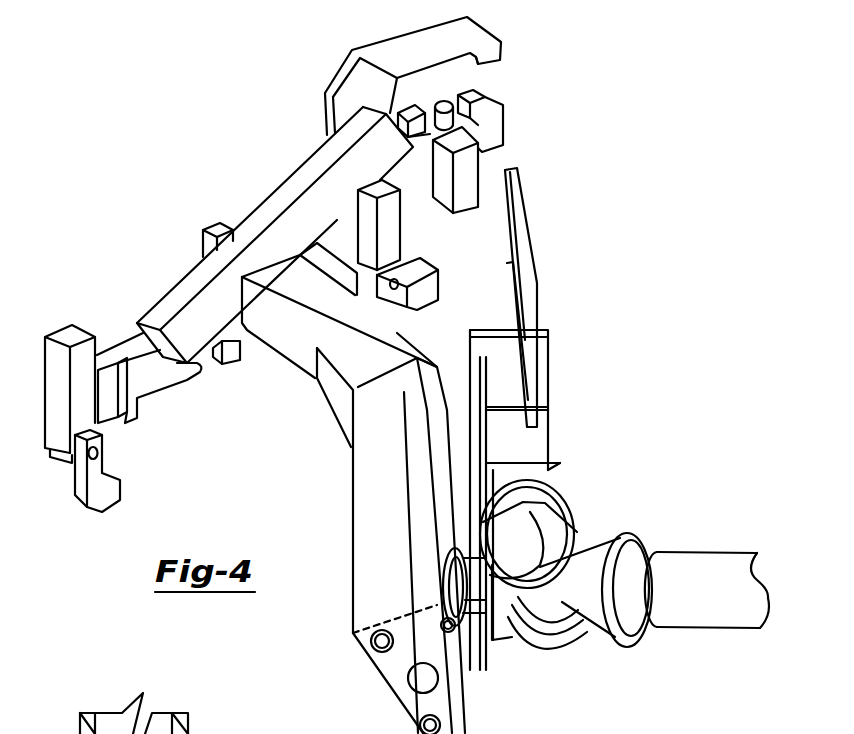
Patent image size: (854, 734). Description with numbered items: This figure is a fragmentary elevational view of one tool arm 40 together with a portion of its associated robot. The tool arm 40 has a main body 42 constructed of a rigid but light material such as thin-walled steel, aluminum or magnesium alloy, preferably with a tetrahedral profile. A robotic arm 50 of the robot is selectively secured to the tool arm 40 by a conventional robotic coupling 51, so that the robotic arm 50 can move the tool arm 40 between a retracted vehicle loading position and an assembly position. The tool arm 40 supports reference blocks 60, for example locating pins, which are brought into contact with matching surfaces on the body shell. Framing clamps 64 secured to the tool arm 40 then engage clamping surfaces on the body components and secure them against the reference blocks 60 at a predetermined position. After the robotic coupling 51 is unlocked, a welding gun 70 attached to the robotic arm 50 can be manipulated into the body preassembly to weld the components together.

The tool arm 40 is at (270, 197).
The main body 42 is at (357, 512).
The robotic arm 50 is at (677, 552).
The robotic coupling 51 is at (463, 600).
The reference block 60 is at (487, 30).
The framing clamp 64 is at (490, 92).
The welding gun 70 is at (527, 203).